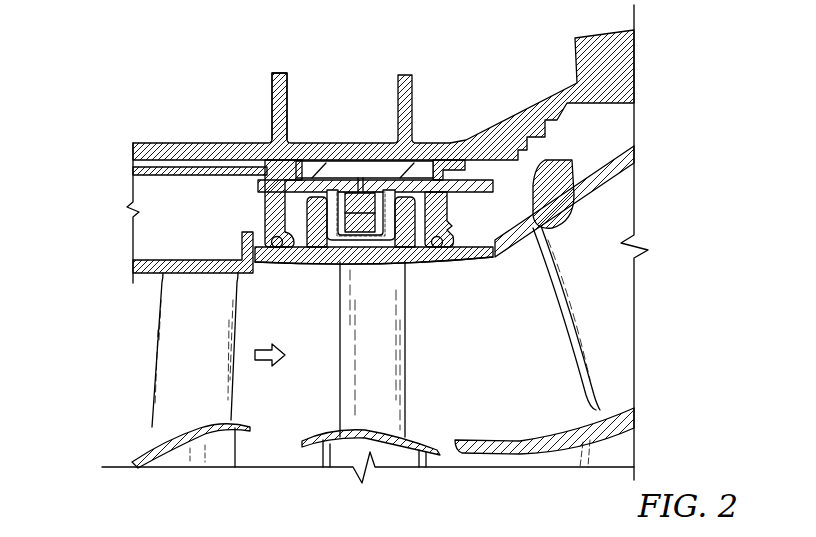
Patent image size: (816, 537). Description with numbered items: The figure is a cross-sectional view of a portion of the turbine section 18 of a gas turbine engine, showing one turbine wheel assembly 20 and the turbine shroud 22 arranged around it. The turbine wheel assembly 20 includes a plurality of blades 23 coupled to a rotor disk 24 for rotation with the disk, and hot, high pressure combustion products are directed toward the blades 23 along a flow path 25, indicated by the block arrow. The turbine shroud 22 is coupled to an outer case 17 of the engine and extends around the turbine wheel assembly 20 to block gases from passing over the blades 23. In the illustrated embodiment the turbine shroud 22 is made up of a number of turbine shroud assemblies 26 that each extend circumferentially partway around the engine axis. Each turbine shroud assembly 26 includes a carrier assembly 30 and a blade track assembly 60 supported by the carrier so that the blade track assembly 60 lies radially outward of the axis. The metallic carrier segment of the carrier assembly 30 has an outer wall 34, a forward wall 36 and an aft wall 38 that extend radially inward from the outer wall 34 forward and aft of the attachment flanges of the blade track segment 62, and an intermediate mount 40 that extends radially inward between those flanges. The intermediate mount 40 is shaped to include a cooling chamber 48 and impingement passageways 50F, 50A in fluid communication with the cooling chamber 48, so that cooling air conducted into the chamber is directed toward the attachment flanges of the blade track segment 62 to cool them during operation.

The turbine section 18 is at (355, 102).
The outer case 17 is at (263, 137).
The turbine shroud 22 is at (446, 140).
The carrier assembly 30 is at (348, 165).
The outer wall 34 is at (327, 169).
The cooling chamber 48 is at (365, 189).
The turbine shroud assembly 26 is at (503, 222).
The aft wall 38 is at (448, 225).
The intermediate mount 40 is at (261, 220).
The forward wall 36 is at (316, 198).
The forward impingement passageway 50F is at (324, 232).
The aft impingement passageway 50A is at (399, 234).
The blade track assembly 60 is at (462, 265).
The blade track segment 62 is at (437, 268).
The flow path 25 is at (276, 341).
The blades 23 is at (409, 352).
The rotor disk 24 is at (443, 448).
The turbine wheel assembly 20 is at (297, 398).